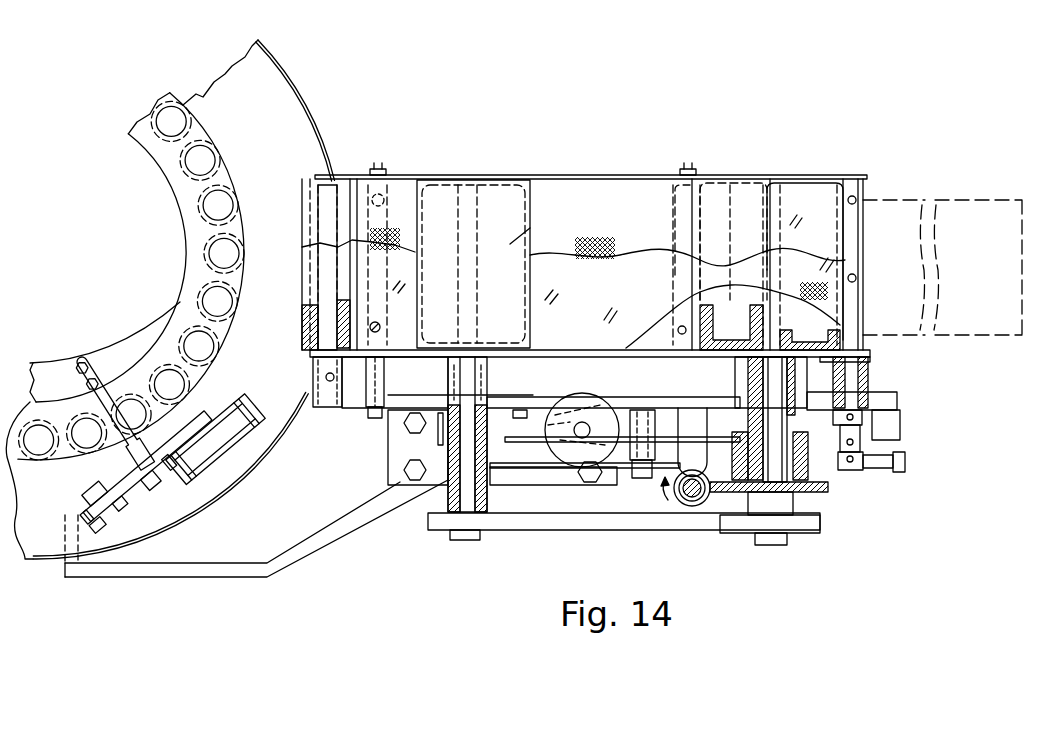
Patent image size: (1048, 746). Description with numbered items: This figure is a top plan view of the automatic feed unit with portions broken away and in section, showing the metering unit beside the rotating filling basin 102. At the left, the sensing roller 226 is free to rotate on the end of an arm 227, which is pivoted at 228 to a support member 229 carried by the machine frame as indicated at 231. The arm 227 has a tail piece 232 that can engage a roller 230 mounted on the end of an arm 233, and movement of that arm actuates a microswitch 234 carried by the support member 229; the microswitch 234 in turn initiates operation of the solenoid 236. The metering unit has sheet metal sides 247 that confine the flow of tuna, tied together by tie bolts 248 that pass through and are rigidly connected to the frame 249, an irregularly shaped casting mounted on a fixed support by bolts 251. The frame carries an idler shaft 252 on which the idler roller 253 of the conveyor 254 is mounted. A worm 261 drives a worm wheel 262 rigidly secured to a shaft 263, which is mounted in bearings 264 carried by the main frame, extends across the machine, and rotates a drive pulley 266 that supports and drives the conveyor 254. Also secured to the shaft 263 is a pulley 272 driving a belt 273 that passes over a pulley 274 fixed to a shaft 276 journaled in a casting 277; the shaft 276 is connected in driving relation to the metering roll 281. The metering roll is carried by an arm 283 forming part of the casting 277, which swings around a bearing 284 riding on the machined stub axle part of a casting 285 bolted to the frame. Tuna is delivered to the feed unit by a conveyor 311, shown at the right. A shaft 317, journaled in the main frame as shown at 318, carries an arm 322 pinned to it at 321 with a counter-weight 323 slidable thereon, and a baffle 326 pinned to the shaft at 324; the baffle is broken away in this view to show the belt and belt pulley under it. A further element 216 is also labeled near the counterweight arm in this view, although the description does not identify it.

The filling basin 102 is at (227, 308).
The pin 216 is at (858, 470).
The sensing element or roller 226 is at (253, 410).
The arm 227 is at (170, 462).
The pivot 228 is at (152, 487).
The support member 229 is at (150, 452).
The roller 230 is at (94, 522).
The frame mounting of support member 231 is at (88, 365).
The tail piece 232 is at (118, 503).
The arm 233 is at (84, 517).
The microswitch 234 is at (96, 492).
The solenoid 236 is at (437, 430).
The sheet metal sides 247 is at (565, 176).
The tie bolts 248 is at (378, 170).
The frame 249 is at (400, 398).
The bolts 251 is at (402, 462).
The idler shaft 252 is at (322, 404).
The idler roller 253 is at (336, 298).
The conveyor 254 is at (618, 186).
The worm 261 is at (710, 492).
The worm wheel 262 is at (828, 490).
The shaft 263 is at (775, 392).
The bearings 264 is at (756, 358).
The drive pulley 266 is at (710, 345).
The pulley 272 is at (800, 533).
The belt 273 is at (635, 530).
The pulley 274 is at (478, 540).
The shaft 276 is at (476, 296).
The casting 277 is at (493, 478).
The metering roll 281 is at (516, 240).
The arm 283 is at (540, 462).
The bearing 284 is at (840, 445).
The casting 285 is at (833, 420).
The conveyor 311 is at (953, 195).
The shaft 317 is at (856, 367).
The journal 318 is at (866, 386).
The pin 321 is at (850, 468).
The arm 322 is at (893, 468).
The counter-weight 323 is at (905, 458).
The pin 324 is at (856, 278).
The baffle 326 is at (855, 204).